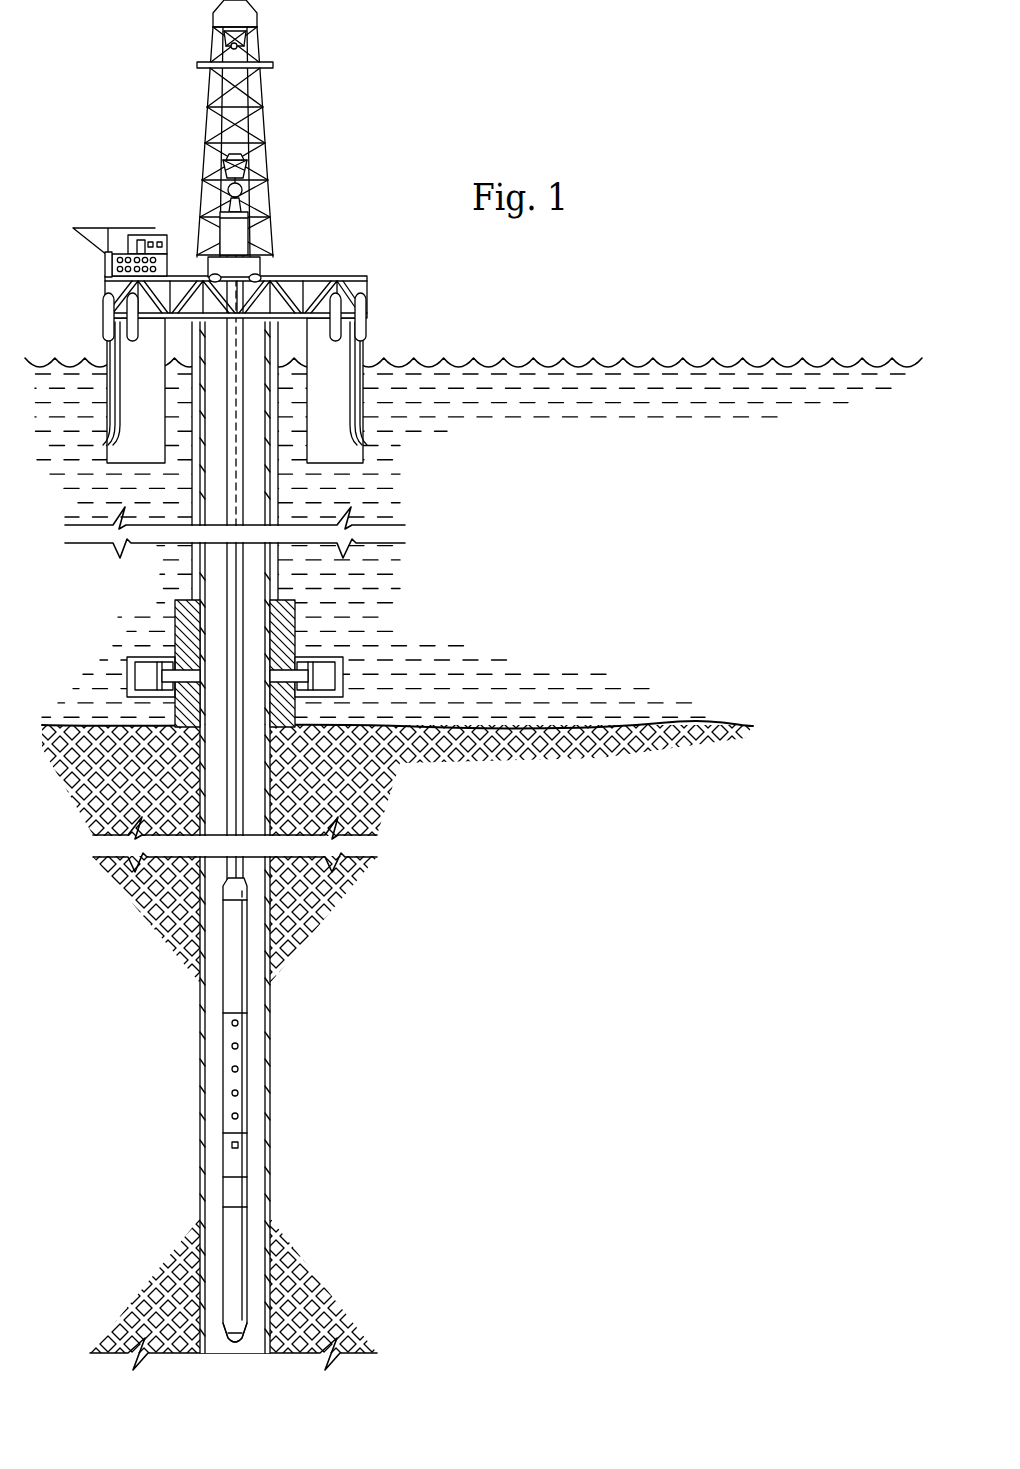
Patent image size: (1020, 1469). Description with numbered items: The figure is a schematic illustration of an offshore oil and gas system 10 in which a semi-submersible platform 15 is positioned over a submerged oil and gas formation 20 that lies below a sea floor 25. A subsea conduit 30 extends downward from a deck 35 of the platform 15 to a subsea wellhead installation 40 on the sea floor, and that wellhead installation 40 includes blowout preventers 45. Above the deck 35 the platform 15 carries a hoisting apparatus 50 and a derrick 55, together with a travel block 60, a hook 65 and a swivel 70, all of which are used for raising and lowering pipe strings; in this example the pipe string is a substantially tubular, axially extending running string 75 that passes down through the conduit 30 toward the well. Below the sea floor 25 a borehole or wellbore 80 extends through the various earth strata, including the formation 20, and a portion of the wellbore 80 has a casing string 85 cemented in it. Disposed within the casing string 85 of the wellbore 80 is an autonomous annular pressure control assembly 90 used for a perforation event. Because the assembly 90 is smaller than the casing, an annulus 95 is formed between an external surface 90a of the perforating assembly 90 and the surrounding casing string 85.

The offshore drilling system 10 is at (473, 685).
The semi-submersible platform 15 is at (353, 277).
The oil and gas formation 20 is at (376, 1025).
The sea floor 25 is at (733, 725).
The subsea conduit 30 is at (278, 488).
The deck 35 is at (185, 273).
The subsea wellhead installation 40 is at (168, 627).
The blowout preventers 45 is at (328, 672).
The hoisting apparatus 50 is at (260, 240).
The derrick 55 is at (212, 42).
The travel block 60 is at (223, 175).
The hook 65 is at (223, 197).
The swivel 70 is at (247, 207).
The running string 75 is at (225, 757).
The wellbore 80 is at (253, 770).
The casing string 85 is at (271, 1043).
The autonomous annular pressure control assembly 90 is at (242, 1110).
The external surface 90a is at (248, 1237).
The annulus 95 is at (257, 1158).